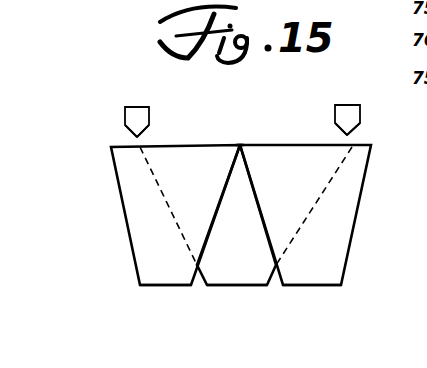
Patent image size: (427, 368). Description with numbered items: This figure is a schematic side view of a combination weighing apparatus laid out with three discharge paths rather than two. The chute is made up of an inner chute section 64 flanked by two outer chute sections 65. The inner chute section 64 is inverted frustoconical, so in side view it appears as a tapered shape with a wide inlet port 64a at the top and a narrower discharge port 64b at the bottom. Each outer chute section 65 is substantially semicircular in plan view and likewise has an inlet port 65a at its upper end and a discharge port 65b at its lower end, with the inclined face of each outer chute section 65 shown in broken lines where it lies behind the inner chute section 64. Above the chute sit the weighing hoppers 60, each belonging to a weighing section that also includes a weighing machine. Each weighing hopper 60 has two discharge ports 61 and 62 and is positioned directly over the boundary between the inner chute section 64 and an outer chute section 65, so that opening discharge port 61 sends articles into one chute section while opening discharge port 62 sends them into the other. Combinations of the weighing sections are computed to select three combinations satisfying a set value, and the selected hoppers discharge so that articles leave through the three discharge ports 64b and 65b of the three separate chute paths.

The weighing hopper 60 is at (129, 105).
The discharge port 61 is at (151, 138).
The discharge port 62 is at (122, 138).
The inner chute section 64 is at (248, 251).
The inlet port 64a is at (244, 135).
The discharge port 64b is at (241, 296).
The outer chute section 65 is at (122, 226).
The inlet port 65a is at (125, 170).
The discharge port 65b is at (166, 294).